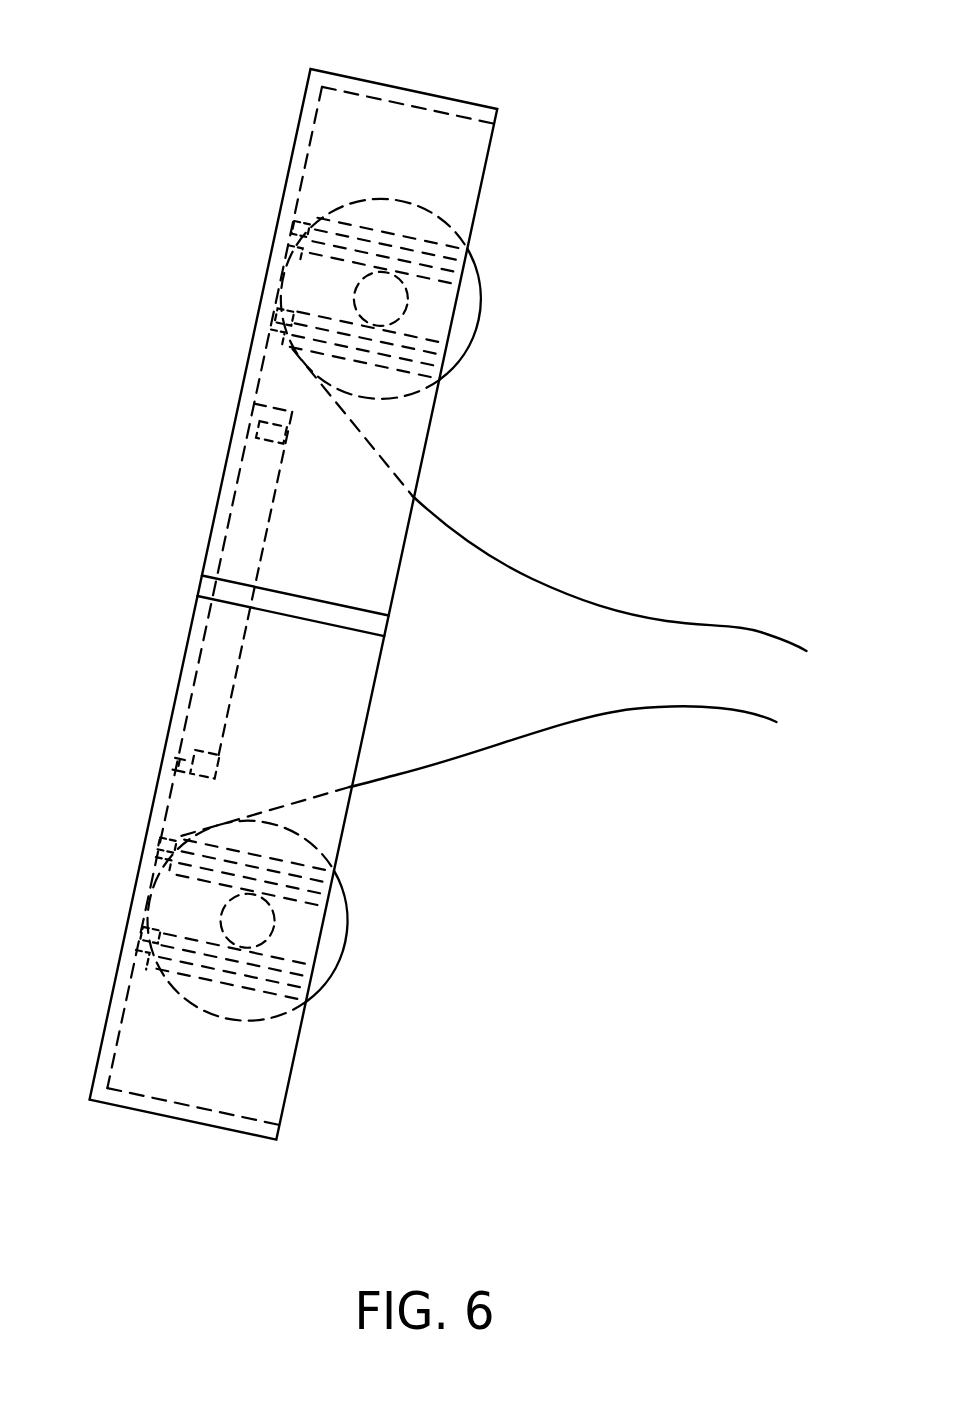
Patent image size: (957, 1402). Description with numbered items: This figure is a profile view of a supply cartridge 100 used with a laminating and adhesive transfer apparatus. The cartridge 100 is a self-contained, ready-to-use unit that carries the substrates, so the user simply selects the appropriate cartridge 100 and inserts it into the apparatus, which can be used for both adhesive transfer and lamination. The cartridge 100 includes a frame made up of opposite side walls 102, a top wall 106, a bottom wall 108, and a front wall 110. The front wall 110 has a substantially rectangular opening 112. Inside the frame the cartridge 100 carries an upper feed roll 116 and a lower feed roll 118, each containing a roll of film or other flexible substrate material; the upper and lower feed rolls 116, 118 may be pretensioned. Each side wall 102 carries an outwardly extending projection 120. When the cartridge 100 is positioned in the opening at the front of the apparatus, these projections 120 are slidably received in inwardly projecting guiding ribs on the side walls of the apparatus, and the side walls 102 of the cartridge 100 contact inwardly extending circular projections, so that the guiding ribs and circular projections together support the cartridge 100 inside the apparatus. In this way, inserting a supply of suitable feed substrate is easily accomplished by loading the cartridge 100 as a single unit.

The cartridge 100 is at (399, 1060).
The side wall 102 is at (330, 703).
The top wall 106 is at (420, 92).
The bottom wall 108 is at (143, 1115).
The front wall 110 is at (255, 362).
The rectangular opening 112 is at (237, 535).
The upper feed roll 116 is at (462, 330).
The lower feed roll 118 is at (337, 940).
The outwardly extending projection 120 is at (282, 607).